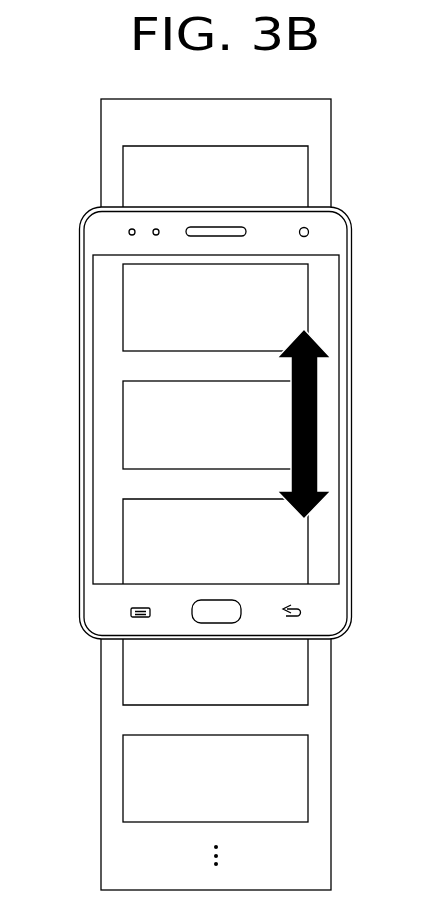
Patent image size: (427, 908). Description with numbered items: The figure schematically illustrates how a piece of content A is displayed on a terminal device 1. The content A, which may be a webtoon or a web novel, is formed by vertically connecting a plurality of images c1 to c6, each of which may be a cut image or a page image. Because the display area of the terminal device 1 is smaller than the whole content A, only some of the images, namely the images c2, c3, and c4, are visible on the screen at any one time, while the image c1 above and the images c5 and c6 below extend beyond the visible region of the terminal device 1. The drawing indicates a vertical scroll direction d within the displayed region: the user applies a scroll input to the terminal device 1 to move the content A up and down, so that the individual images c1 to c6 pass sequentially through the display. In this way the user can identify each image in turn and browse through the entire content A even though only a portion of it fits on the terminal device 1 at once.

The terminal device 1 is at (90, 210).
The content A is at (331, 126).
The display d is at (191, 419).
The image c1 is at (215, 176).
The image c2 is at (215, 307).
The image c3 is at (215, 425).
The image c4 is at (215, 541).
The image c5 is at (215, 672).
The image c6 is at (215, 778).